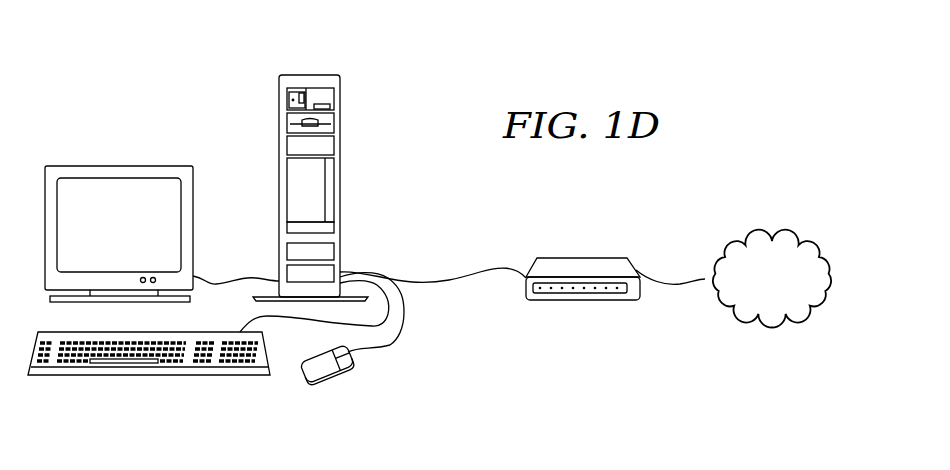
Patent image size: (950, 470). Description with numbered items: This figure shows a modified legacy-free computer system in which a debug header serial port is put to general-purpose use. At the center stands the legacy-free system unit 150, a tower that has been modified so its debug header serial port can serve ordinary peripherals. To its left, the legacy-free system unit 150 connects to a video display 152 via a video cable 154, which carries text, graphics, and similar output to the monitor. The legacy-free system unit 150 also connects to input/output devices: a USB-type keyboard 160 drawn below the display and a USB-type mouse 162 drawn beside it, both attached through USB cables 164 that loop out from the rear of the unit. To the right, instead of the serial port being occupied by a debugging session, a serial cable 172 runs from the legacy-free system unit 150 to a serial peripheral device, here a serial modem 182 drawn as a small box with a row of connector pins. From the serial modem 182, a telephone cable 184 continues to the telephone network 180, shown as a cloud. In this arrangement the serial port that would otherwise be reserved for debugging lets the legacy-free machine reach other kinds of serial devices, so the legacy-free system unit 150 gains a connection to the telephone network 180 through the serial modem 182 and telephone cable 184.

The legacy-free system unit 150 is at (365, 63).
The video display 152 is at (116, 165).
The video cable 154 is at (238, 278).
The USB-type keyboard 160 is at (138, 377).
The USB-type mouse 162 is at (308, 383).
The USB cables 164 is at (374, 310).
The serial cable 172 is at (442, 280).
The telephone network 180 is at (777, 228).
The serial modem 182 is at (585, 302).
The telephone cable 184 is at (667, 278).